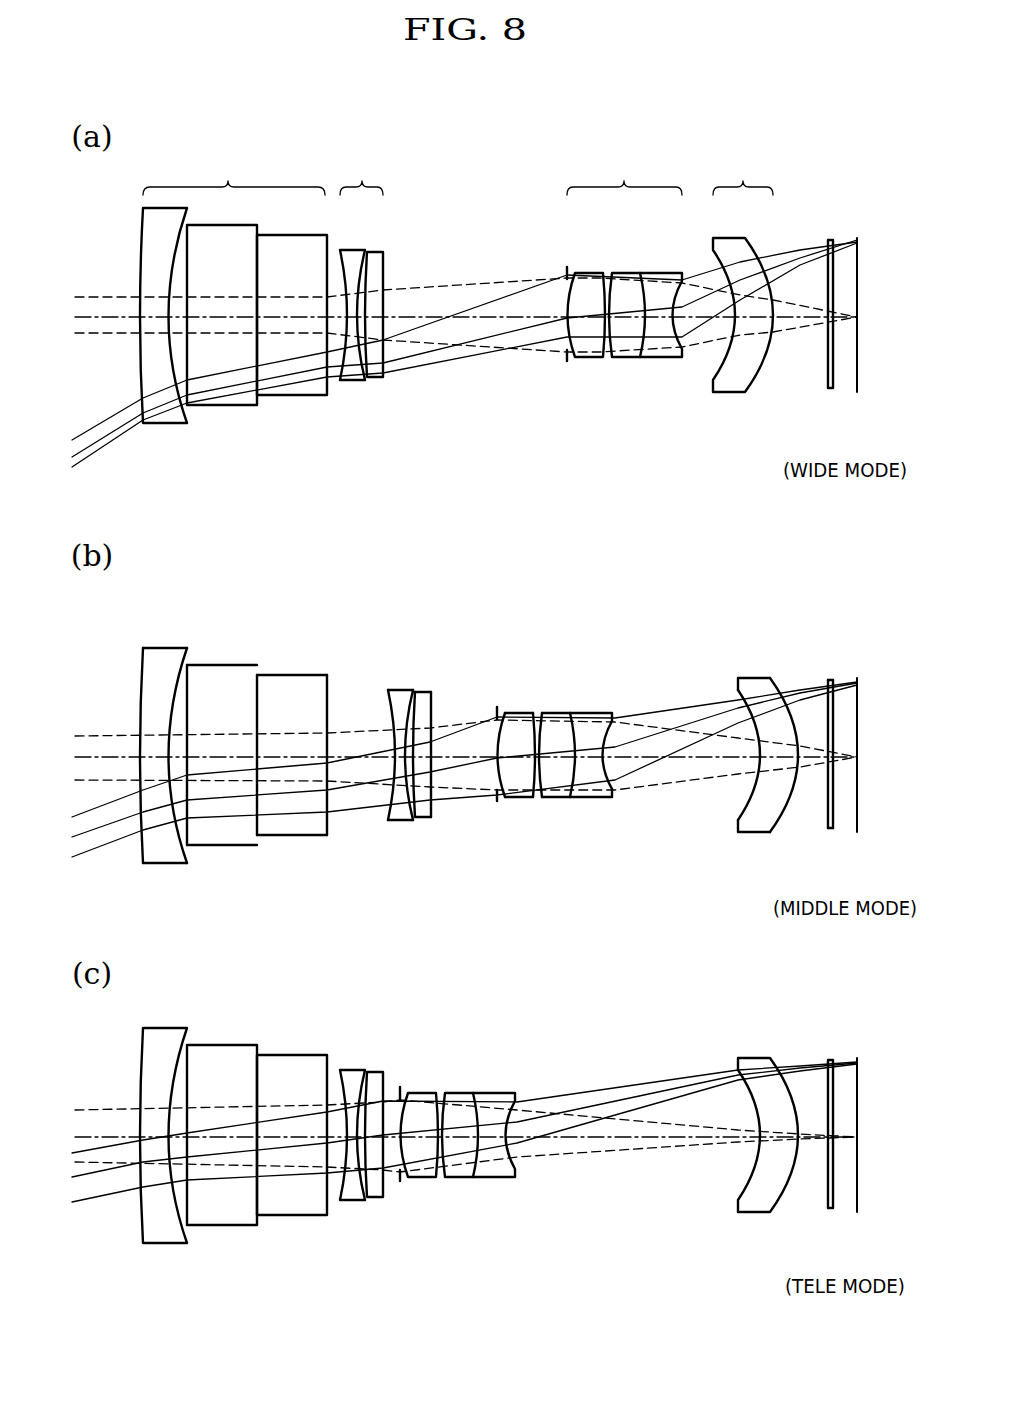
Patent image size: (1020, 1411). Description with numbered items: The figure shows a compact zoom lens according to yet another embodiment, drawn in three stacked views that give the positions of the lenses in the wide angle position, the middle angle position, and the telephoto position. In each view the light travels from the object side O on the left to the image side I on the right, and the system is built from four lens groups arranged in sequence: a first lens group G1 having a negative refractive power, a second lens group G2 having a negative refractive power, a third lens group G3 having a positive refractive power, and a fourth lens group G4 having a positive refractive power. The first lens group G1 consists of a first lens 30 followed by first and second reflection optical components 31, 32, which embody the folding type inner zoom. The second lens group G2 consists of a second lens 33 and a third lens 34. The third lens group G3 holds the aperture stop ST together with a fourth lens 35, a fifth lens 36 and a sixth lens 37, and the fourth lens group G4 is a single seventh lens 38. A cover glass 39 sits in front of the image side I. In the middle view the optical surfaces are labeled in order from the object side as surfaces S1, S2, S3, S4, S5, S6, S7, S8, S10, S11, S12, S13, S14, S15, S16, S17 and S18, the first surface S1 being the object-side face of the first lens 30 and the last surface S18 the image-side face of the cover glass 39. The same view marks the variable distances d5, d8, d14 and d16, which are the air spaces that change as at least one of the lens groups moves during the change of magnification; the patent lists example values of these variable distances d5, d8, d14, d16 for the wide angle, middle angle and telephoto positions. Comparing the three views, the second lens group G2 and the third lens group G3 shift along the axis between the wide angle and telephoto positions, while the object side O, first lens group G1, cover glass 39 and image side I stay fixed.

The first lens 30 is at (165, 424).
The first reflection optical component 31 is at (222, 406).
The second reflection optical component 32 is at (291, 396).
The second lens 33 is at (353, 381).
The third lens 34 is at (377, 380).
The aperture stop ST is at (567, 358).
The fourth lens 35 is at (588, 358).
The fifth lens 36 is at (625, 358).
The sixth lens 37 is at (662, 358).
The seventh lens 38 is at (728, 393).
The cover glass 39 is at (830, 389).
The first lens group G1 is at (234, 177).
The second lens group G2 is at (361, 177).
The third lens group G3 is at (624, 177).
The fourth lens group G4 is at (743, 177).
The object side O is at (53, 313).
The image side I is at (871, 315).
The lens surface 1 S1 is at (141, 687).
The lens surface 2 S2 is at (183, 690).
The lens surface 3 S3 is at (190, 707).
The lens surface 4 S4 is at (258, 703).
The lens surface 5 S5 is at (328, 700).
The lens surface 6 S6 is at (390, 722).
The lens surface 7 S7 is at (415, 713).
The lens surface 8 S8 is at (432, 713).
The lens surface 10 S10 is at (498, 710).
The lens surface 11 S11 is at (530, 723).
The lens surface 12 S12 is at (543, 780).
The lens surface 13 S13 is at (575, 733).
The lens surface 14 S14 is at (610, 737).
The lens surface 15 S15 is at (748, 717).
The lens surface 16 S16 is at (786, 700).
The lens surface 17 S17 is at (826, 705).
The lens surface 18 S18 is at (836, 705).
The variable distance d5 is at (358, 758).
The variable distance d8 is at (465, 758).
The variable distance d14 is at (673, 758).
The variable distance d16 is at (813, 758).